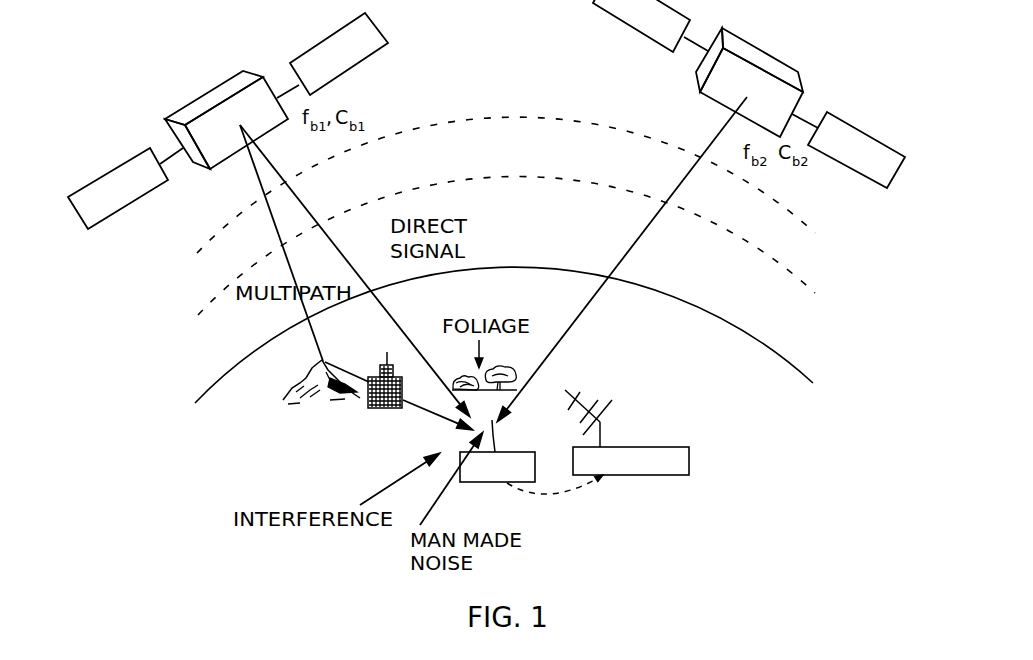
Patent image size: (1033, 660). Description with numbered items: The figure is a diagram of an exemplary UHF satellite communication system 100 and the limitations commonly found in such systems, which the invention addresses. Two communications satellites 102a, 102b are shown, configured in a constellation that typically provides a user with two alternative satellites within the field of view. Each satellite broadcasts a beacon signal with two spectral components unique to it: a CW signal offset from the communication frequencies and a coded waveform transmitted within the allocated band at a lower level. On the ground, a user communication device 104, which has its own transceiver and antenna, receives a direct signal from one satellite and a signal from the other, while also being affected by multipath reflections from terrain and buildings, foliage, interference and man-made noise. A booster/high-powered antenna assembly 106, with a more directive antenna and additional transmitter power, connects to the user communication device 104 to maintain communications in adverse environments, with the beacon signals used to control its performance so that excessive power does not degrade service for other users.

The UHF satellite communication system 100 is at (513, 38).
The communications satellite 102a is at (213, 90).
The communications satellite 102b is at (760, 45).
The user communication device 104 is at (468, 483).
The booster/high-powered antenna assembly 106 is at (781, 453).